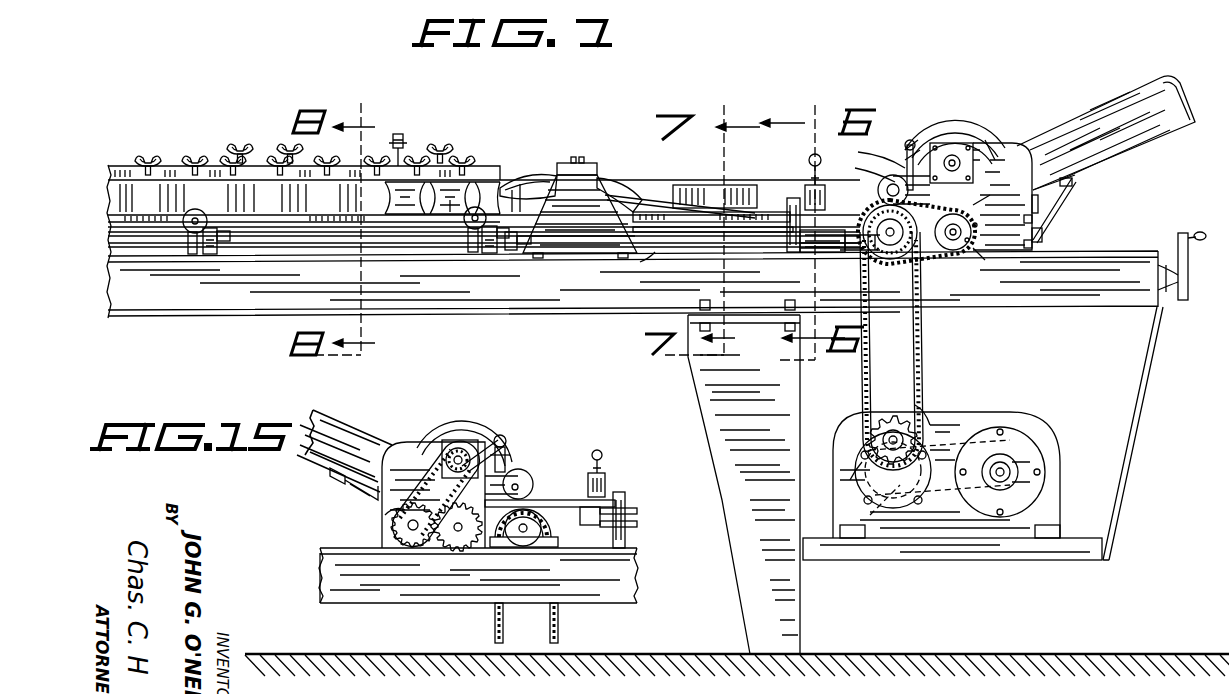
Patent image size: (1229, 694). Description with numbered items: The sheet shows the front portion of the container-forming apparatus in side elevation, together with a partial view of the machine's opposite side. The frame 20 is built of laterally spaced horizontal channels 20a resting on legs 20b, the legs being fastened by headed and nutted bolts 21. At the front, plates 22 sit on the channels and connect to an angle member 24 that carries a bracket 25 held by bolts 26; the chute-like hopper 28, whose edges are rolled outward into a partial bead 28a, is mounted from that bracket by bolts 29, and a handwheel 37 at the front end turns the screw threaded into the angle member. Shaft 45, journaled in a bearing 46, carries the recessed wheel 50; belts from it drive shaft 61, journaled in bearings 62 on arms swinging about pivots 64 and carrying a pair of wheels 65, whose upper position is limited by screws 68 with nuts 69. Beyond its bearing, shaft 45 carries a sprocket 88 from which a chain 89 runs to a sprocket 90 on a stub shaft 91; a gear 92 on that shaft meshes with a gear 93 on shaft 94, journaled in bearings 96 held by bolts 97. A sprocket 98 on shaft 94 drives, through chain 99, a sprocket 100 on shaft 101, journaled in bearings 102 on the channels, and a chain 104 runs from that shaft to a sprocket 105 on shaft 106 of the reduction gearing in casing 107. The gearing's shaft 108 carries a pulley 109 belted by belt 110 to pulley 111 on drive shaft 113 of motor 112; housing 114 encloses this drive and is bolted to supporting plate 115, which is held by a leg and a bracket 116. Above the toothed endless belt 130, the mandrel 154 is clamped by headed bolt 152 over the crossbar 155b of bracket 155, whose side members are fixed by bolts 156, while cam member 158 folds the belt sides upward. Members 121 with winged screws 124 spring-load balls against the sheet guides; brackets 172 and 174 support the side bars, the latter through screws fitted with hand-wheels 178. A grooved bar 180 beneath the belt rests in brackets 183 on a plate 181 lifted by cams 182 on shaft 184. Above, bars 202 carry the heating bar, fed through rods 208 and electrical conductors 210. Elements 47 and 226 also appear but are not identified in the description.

In FIG. 15, the frame 20 is at (342, 606).
In FIG. 1, the channels 20a is at (580, 310).
In FIG. 15, the channels 20a is at (626, 590).
In FIG. 1, the legs 20b is at (728, 535).
In FIG. 1, the headed and nutted bolts 21 is at (783, 327).
In FIG. 1, the plates 22 is at (1020, 143).
In FIG. 15, the plates 22 is at (433, 495).
In FIG. 1, the angle member 24 is at (1045, 230).
In FIG. 1, the bracket 25 is at (1060, 205).
In FIG. 1, the bolts 26 is at (1044, 238).
In FIG. 1, the chute-like hopper 28 is at (1135, 142).
In FIG. 1, the partial bead 28a is at (1110, 100).
In FIG. 1, the bolts 29 is at (1080, 185).
In FIG. 1, the handwheel 37 is at (1178, 300).
In FIG. 1, the shaft 45 is at (992, 140).
In FIG. 15, the shaft 45 is at (470, 458).
In FIG. 1, the bearing 46 is at (952, 184).
In FIG. 15, the bearing 46 is at (442, 458).
In FIG. 1, the motor mount 47 is at (988, 148).
In FIG. 1, the wheel 50 is at (956, 156).
In FIG. 1, the shaft 61 is at (878, 197).
In FIG. 1, the bearings 62 is at (884, 184).
In FIG. 1, the pivots 64 is at (870, 152).
In FIG. 1, the wheels 65 is at (862, 167).
In FIG. 15, the wheels 65 is at (530, 482).
In FIG. 1, the screws 68 is at (912, 140).
In FIG. 15, the screws 68 is at (507, 442).
In FIG. 1, the nuts 69 is at (906, 156).
In FIG. 15, the sprocket 88 is at (455, 440).
In FIG. 15, the chain 89 is at (385, 488).
In FIG. 15, the sprocket 90 is at (400, 508).
In FIG. 15, the stub shaft 91 is at (412, 548).
In FIG. 15, the gear 92 is at (396, 525).
In FIG. 15, the gear 93 is at (455, 552).
In FIG. 1, the shaft 94 is at (955, 250).
In FIG. 15, the shaft 94 is at (520, 547).
In FIG. 1, the bearings 96 is at (972, 238).
In FIG. 1, the bolts 97 is at (990, 229).
In FIG. 1, the sprocket 98 is at (928, 258).
In FIG. 1, the chain 99 is at (895, 246).
In FIG. 1, the sprocket 100 is at (884, 258).
In FIG. 1, the shaft 101 is at (860, 252).
In FIG. 15, the shaft 101 is at (530, 540).
In FIG. 1, the bearings 102 is at (840, 250).
In FIG. 15, the bearings 102 is at (508, 550).
In FIG. 1, the chain 104 is at (926, 350).
In FIG. 15, the chain 104 is at (505, 622).
In FIG. 1, the sprocket 105 is at (893, 414).
In FIG. 1, the shaft 106 is at (917, 406).
In FIG. 1, the casing 107 is at (860, 478).
In FIG. 1, the shaft 108 is at (858, 495).
In FIG. 1, the pulley 109 is at (870, 515).
In FIG. 1, the belt 110 is at (925, 498).
In FIG. 1, the pulley 111 is at (1046, 488).
In FIG. 1, the motor 112 is at (1000, 428).
In FIG. 1, the drive shaft 113 is at (1003, 470).
In FIG. 1, the housing 114 is at (1052, 440).
In FIG. 1, the supporting plate 115 is at (1085, 561).
In FIG. 1, the bracket 116 is at (1128, 480).
In FIG. 1, the members 121 is at (802, 205).
In FIG. 1, the screws 124 is at (811, 156).
In FIG. 15, the screws 124 is at (602, 462).
In FIG. 1, the endless belt 130 is at (640, 197).
In FIG. 1, the headed bolt 152 is at (580, 162).
In FIG. 1, the mandrel 154 is at (710, 185).
In FIG. 1, the bracket 155 is at (645, 255).
In FIG. 1, the crossbar 155b is at (600, 178).
In FIG. 1, the bolts 156 is at (640, 262).
In FIG. 1, the cam member 158 is at (528, 178).
In FIG. 1, the brackets 172 is at (222, 243).
In FIG. 1, the brackets 174 is at (192, 250).
In FIG. 1, the hand-wheels 178 is at (188, 230).
In FIG. 1, the bar 180 is at (805, 195).
In FIG. 1, the plate 181 is at (770, 232).
In FIG. 1, the cams 182 is at (515, 248).
In FIG. 1, the brackets 183 is at (788, 246).
In FIG. 15, the brackets 183 is at (626, 502).
In FIG. 1, the shaft 184 is at (690, 225).
In FIG. 1, the bars 202 is at (252, 162).
In FIG. 1, the rods 208 is at (396, 136).
In FIG. 1, the electrical conductors 210 is at (402, 142).
In FIG. 1, the cover 226 is at (925, 125).